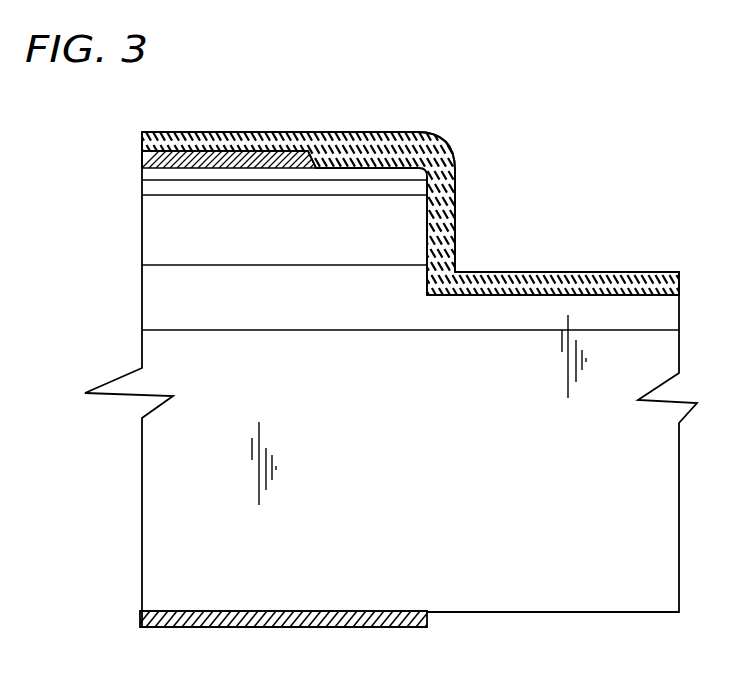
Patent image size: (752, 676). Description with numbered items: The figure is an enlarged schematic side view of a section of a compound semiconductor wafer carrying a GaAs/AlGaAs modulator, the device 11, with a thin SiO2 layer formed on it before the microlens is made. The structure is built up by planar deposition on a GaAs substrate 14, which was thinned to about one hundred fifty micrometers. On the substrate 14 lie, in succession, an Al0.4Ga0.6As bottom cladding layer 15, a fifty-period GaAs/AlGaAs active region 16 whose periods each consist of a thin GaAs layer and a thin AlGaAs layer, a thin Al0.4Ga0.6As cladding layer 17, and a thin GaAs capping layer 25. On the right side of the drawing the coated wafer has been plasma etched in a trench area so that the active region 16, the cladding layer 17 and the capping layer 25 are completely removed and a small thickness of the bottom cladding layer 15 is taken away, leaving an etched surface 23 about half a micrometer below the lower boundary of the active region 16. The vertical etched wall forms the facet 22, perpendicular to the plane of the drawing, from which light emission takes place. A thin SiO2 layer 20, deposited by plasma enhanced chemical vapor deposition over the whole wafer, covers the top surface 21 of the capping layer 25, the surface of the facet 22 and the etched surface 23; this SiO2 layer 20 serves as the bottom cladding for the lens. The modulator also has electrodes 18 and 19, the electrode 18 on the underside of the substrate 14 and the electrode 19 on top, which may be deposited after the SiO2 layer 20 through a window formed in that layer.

The device 11 is at (362, 93).
The GaAs substrate 14 is at (143, 527).
The bottom cladding layer 15 is at (143, 298).
The active region 16 is at (143, 235).
The cladding layer 17 is at (143, 195).
The electrode 18 is at (243, 628).
The electrode 19 is at (143, 140).
The SiO2 layer 20 is at (428, 133).
The top surface 21 is at (338, 170).
The facet 22 is at (447, 217).
The etched surface 23 is at (478, 298).
The capping layer 25 is at (143, 173).